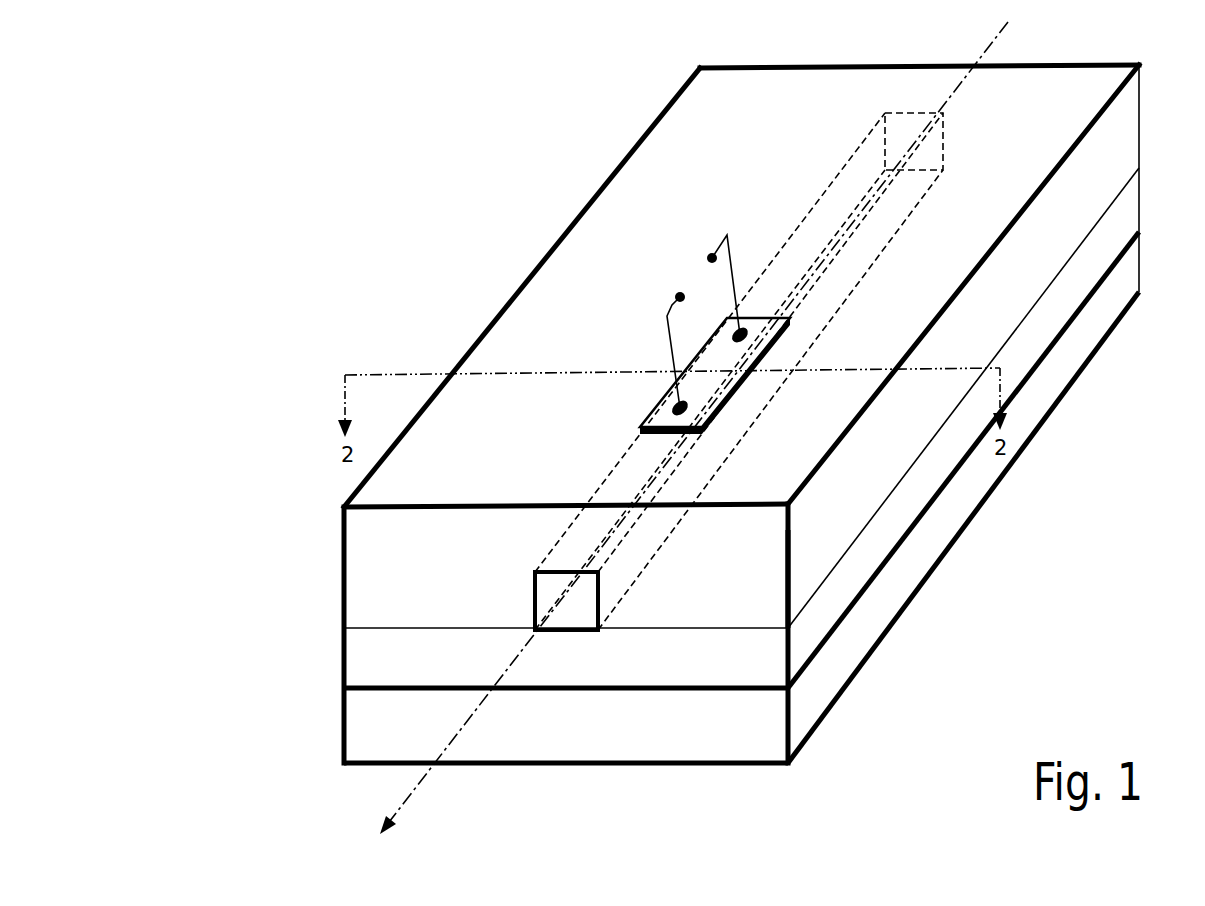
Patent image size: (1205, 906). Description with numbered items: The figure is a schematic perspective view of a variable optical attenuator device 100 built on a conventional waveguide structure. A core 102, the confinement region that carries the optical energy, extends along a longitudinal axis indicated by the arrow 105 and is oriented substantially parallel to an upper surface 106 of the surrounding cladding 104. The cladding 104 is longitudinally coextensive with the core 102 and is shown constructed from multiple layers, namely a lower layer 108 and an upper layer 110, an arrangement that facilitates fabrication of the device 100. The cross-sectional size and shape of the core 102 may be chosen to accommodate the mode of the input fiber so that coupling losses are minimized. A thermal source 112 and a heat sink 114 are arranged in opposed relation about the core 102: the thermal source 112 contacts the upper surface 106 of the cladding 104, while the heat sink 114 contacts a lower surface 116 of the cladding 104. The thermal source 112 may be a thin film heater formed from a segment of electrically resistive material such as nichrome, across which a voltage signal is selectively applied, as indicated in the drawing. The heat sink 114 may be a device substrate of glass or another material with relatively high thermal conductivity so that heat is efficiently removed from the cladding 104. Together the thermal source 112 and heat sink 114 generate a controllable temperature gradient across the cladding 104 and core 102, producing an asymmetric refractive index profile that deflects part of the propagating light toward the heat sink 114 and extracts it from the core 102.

The variable optical attenuator device 100 is at (361, 766).
The core 102 is at (535, 592).
The cladding 104 is at (748, 597).
The longitudinal axis arrow 105 is at (418, 787).
The upper surface 106 is at (737, 475).
The lower layer 108 is at (368, 663).
The upper layer 110 is at (373, 611).
The thermal source 112 is at (708, 362).
The heat sink 114 is at (363, 740).
The lower surface 116 is at (705, 688).